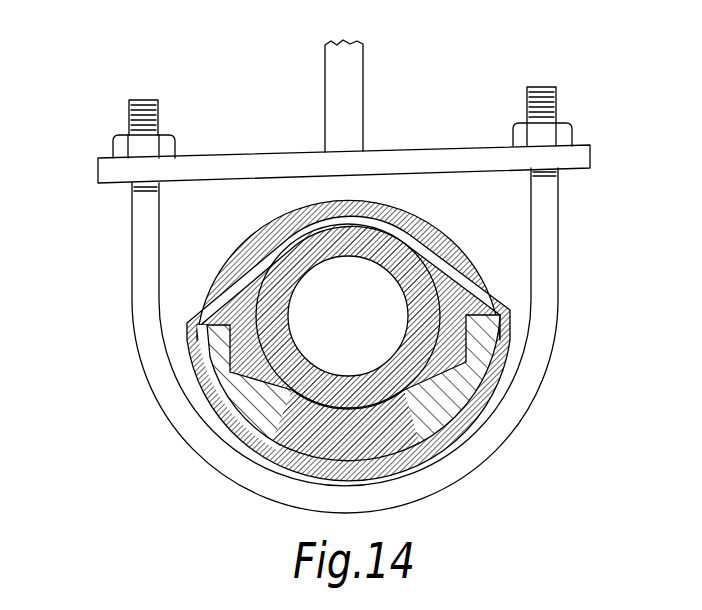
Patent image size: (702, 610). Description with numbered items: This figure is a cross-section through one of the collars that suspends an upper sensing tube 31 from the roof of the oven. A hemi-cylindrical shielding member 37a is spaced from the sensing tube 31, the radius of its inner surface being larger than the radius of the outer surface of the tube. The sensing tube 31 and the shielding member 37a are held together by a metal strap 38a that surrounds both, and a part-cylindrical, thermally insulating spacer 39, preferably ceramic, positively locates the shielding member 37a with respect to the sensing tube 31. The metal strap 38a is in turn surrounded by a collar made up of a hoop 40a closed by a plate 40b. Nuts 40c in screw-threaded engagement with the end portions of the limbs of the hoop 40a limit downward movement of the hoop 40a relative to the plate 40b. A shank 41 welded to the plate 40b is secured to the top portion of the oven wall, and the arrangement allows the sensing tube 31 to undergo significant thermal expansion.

The sensing tube 31 is at (272, 288).
The shielding member 37a is at (212, 352).
The metal strap 38a is at (210, 411).
The spacer 39 is at (248, 457).
The hoop 40a is at (547, 247).
The plate 40b is at (237, 162).
The nut 40c is at (123, 148).
The shank 41 is at (355, 67).